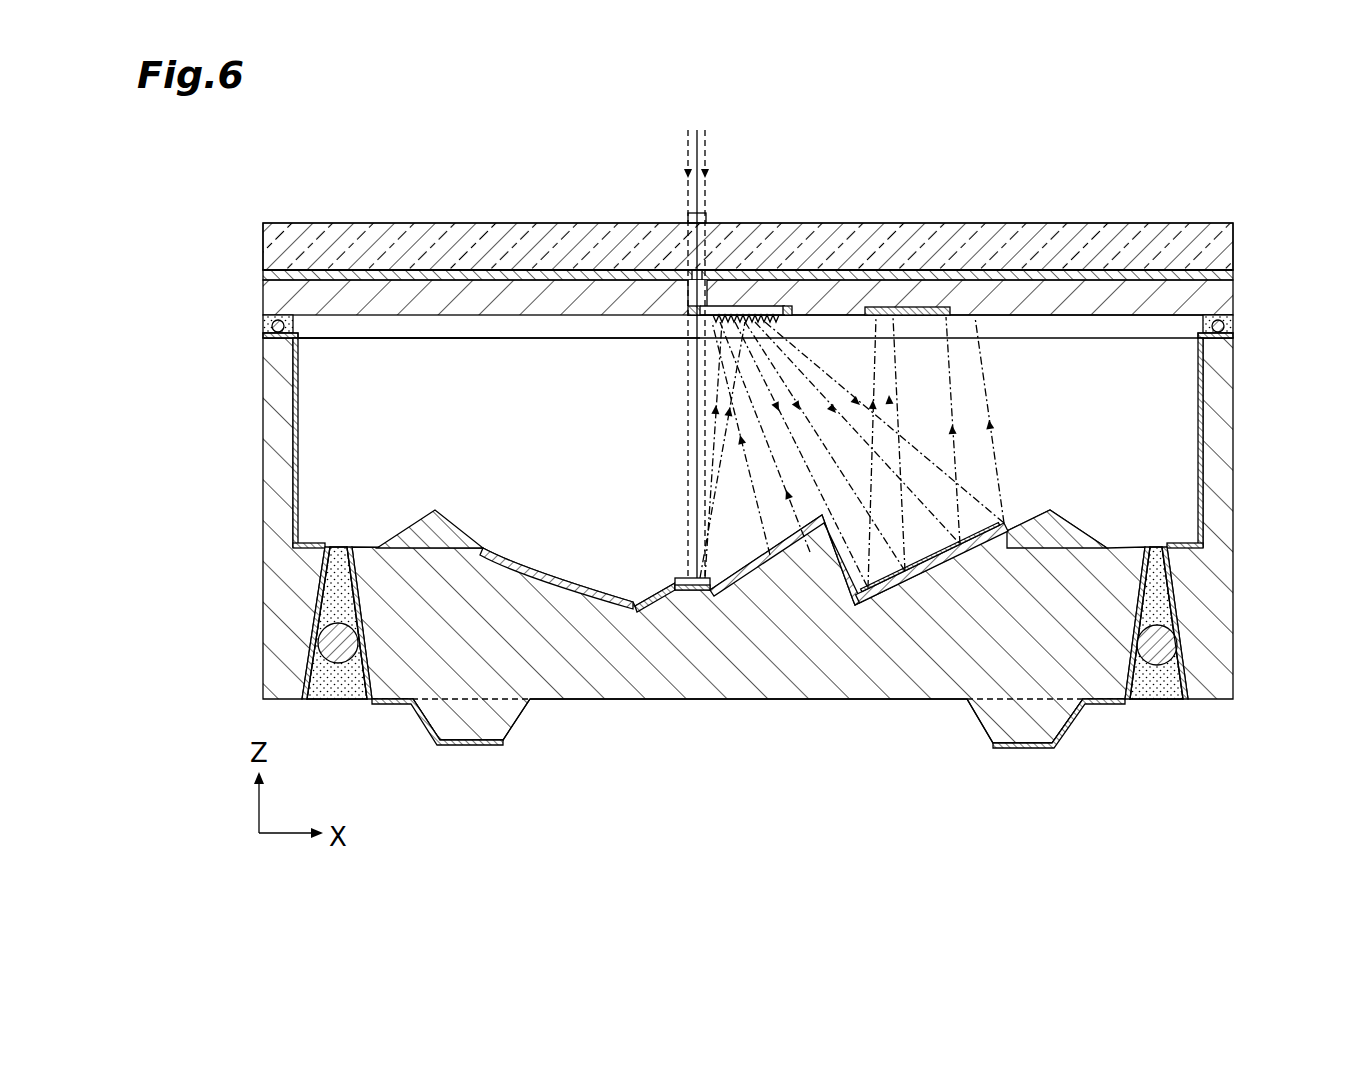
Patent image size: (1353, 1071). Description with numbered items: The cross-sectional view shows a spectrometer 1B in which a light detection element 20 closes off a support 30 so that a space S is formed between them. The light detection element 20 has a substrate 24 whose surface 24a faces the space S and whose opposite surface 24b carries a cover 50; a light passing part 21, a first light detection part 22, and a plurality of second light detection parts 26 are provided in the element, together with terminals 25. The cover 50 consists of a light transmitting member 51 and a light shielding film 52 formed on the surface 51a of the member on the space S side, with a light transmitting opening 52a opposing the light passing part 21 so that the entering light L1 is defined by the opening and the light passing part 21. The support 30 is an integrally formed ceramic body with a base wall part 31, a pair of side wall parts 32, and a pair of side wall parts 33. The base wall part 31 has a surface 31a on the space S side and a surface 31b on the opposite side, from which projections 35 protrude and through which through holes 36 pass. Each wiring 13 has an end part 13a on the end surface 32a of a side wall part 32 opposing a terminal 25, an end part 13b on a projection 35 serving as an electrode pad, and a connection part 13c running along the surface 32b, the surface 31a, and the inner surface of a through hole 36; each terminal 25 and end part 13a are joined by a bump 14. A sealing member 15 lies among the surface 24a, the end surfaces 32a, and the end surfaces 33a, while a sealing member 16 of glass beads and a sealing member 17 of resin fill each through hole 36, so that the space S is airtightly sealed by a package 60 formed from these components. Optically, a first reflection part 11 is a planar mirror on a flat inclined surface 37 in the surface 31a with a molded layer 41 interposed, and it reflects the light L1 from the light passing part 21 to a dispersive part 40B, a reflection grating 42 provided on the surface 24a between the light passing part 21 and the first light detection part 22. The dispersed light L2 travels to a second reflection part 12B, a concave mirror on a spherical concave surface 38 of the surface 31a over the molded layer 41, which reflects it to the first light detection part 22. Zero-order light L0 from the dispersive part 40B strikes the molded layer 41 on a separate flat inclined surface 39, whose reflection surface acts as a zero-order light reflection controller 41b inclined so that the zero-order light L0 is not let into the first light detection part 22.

The spectrometer 1B is at (1122, 170).
The first reflection part 11 is at (683, 578).
The second reflection part 12B is at (965, 556).
The wiring 13 is at (747, 575).
The end part 13a is at (285, 343).
The end part 13b is at (472, 742).
The connection part 13c is at (298, 416).
The bump 14 is at (272, 326).
The sealing member 15 is at (570, 335).
The sealing member 16 is at (320, 640).
The sealing member 17 is at (330, 676).
The light detection element 20 is at (746, 282).
The light passing part 21 is at (730, 320).
The first light detection part 22 is at (935, 320).
The substrate 24 is at (263, 242).
The surface 24a is at (338, 338).
The surface 24b is at (340, 262).
The terminal 25 is at (268, 316).
The second light detection parts 26 is at (690, 306).
The support 30 is at (747, 552).
The base wall part 31 is at (747, 622).
The surface 31a is at (407, 533).
The surface 31b is at (612, 700).
The side wall parts 32 is at (263, 430).
The end surface 32a is at (278, 334).
The surface 32b is at (298, 446).
The side wall parts 33 is at (488, 352).
The end surface 33a is at (410, 340).
The projections 35 is at (510, 722).
The through holes 36 is at (352, 700).
The inclined surface 37 is at (648, 572).
The concave surface 38 is at (1015, 530).
The inclined surface 39 is at (768, 548).
The dispersive part 40B is at (737, 328).
The molded layer 41 is at (905, 585).
The zero-order light reflection controller 41b is at (785, 568).
The grating 42 is at (737, 324).
The cover 50 is at (756, 271).
The light transmitting member 51 is at (1172, 242).
The surface 51a is at (1218, 275).
The light shielding film 52 is at (1078, 275).
The light transmitting opening 52a is at (692, 315).
The package 60 is at (747, 575).
The space S is at (503, 455).
The zero-order light L0 is at (712, 510).
The light L1 is at (690, 150).
The dispersed light L2 is at (812, 330).